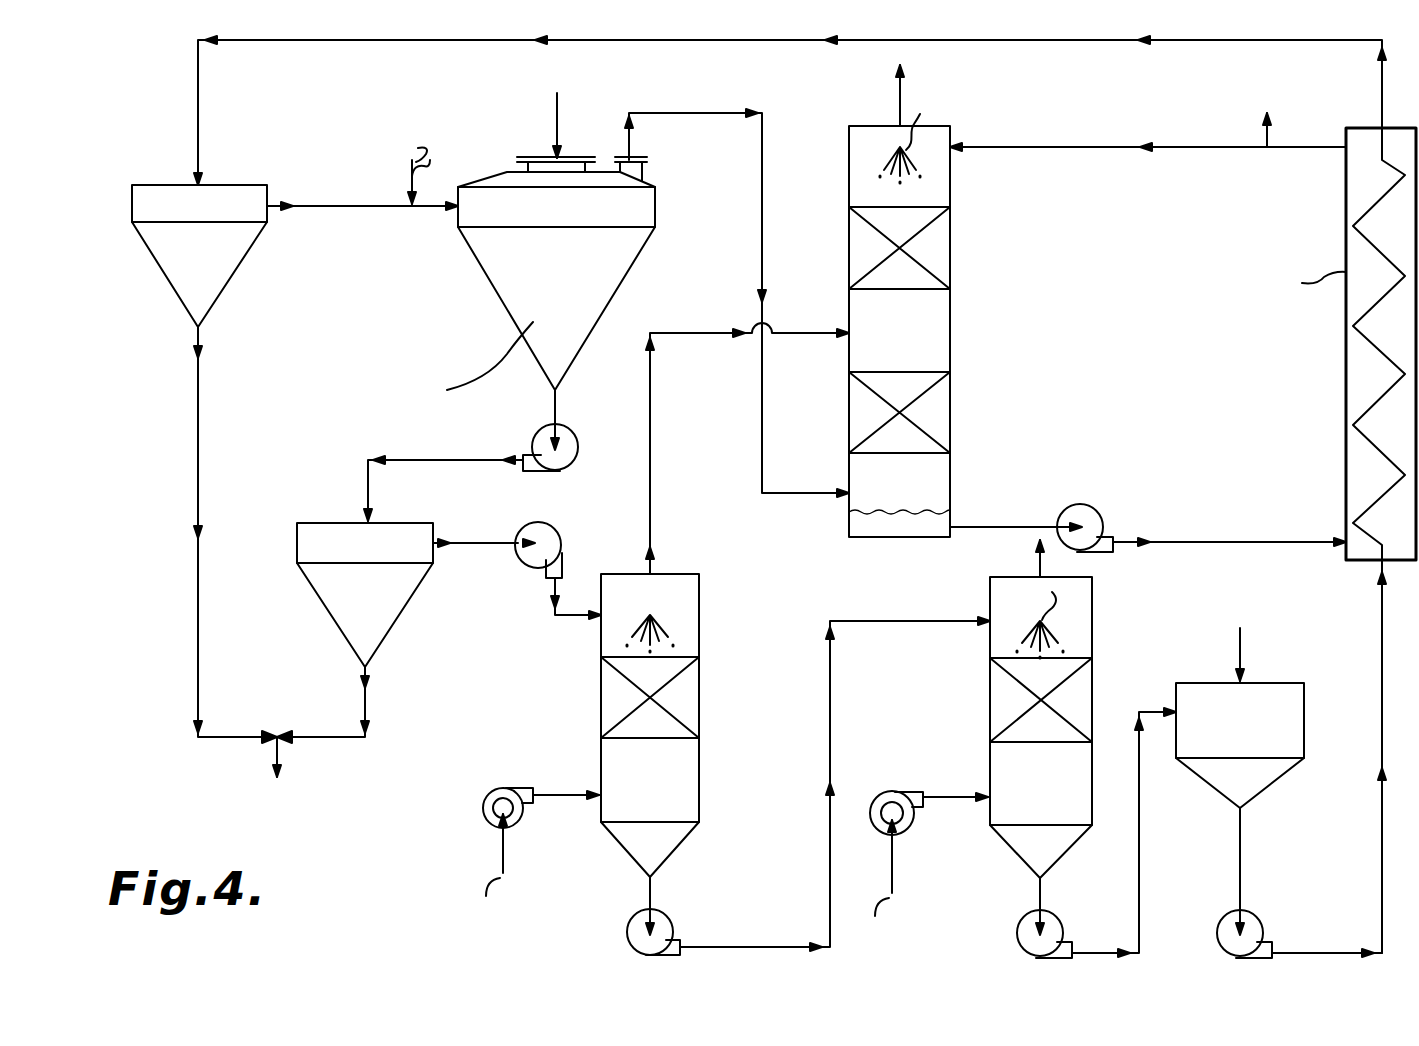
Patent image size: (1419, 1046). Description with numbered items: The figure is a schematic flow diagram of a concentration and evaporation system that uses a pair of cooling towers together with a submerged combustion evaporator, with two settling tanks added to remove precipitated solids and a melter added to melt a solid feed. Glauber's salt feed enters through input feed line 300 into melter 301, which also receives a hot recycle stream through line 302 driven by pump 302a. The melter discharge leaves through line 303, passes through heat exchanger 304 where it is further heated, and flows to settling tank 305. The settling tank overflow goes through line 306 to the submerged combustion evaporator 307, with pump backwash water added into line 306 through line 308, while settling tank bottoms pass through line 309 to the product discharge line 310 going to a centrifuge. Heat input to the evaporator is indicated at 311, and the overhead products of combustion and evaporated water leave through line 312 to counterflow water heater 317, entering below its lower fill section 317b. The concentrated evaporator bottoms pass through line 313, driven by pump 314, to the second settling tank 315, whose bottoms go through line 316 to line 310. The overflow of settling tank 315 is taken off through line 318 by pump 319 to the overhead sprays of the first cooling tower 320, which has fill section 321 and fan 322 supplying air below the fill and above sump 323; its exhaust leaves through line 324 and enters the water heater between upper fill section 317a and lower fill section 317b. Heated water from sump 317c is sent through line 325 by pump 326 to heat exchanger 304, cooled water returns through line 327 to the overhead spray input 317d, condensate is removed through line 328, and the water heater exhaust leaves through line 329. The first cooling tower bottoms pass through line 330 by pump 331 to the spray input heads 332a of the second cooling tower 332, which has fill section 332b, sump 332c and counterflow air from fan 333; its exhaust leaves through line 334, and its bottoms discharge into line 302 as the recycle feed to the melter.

The input feed line 300 is at (1240, 656).
The melter 301 is at (1304, 684).
The recycle line 302 is at (1140, 866).
The pump 302a is at (1017, 922).
The melter discharge line 303 is at (307, 40).
The heat exchanger 304 is at (1346, 250).
The settling tank 305 is at (237, 186).
The overflow line 306 is at (311, 206).
The submerged combustion evaporator 307 is at (491, 280).
The pump backwash water line 308 is at (404, 146).
The bottoms line 309 is at (200, 452).
The product discharge line 310 is at (268, 747).
The heat input 311 is at (557, 123).
The overhead line 312 is at (710, 99).
The evaporator bottoms discharge line 313 is at (555, 405).
The pump 314 is at (575, 441).
The second settling tank 315 is at (414, 523).
The bottoms line 316 is at (367, 712).
The counterflow water heater 317 is at (925, 301).
The upper fill section 317a is at (937, 245).
The lower fill section 317b is at (937, 415).
The sump 317c is at (919, 518).
The overhead spray input 317d is at (925, 137).
The overflow line 318 is at (493, 547).
The pump 319 is at (556, 537).
The first cooling tower 320 is at (665, 725).
The fill section 321 is at (686, 700).
The fan 322 is at (512, 773).
The sump 323 is at (626, 856).
The exhaust line 324 is at (651, 499).
The heated water line 325 is at (996, 527).
The pump 326 is at (1092, 513).
The return line 327 is at (1197, 149).
The condensate line 328 is at (1265, 135).
The exhaust overhead line 329 is at (898, 101).
The bottoms line 330 is at (648, 896).
The pump 331 is at (680, 905).
The second cooling tower 332 is at (1031, 710).
The spray input heads 332a is at (1031, 622).
The fill section 332b is at (990, 706).
The sump 332c is at (1020, 858).
The fan 333 is at (886, 793).
The exhaust overhead line 334 is at (1040, 563).